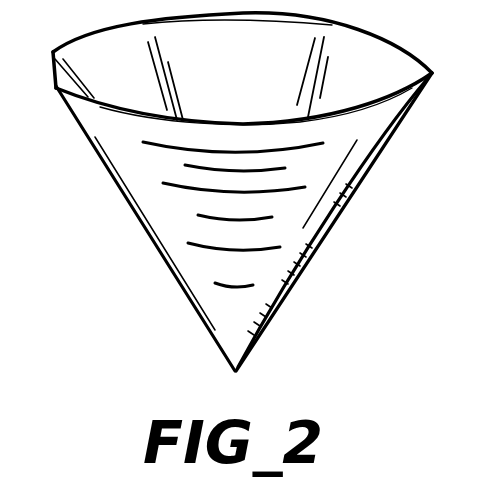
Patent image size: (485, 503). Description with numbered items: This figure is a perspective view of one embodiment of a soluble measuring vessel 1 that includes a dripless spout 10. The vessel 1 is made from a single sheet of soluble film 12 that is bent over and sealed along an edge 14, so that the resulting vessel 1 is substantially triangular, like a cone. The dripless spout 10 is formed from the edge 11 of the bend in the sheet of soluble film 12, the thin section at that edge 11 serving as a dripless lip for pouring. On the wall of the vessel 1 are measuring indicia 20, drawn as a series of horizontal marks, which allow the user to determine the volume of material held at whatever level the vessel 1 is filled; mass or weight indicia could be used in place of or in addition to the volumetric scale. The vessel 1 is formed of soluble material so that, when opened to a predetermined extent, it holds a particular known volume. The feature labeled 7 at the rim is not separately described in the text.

The measuring vessel 1 is at (237, 196).
The rim 7 is at (347, 92).
The dripless spout 10 is at (57, 78).
The edge 11 is at (96, 111).
The sheet of soluble film 12 is at (144, 193).
The sealed edge 14 is at (341, 210).
The measuring indicia 20 is at (269, 246).